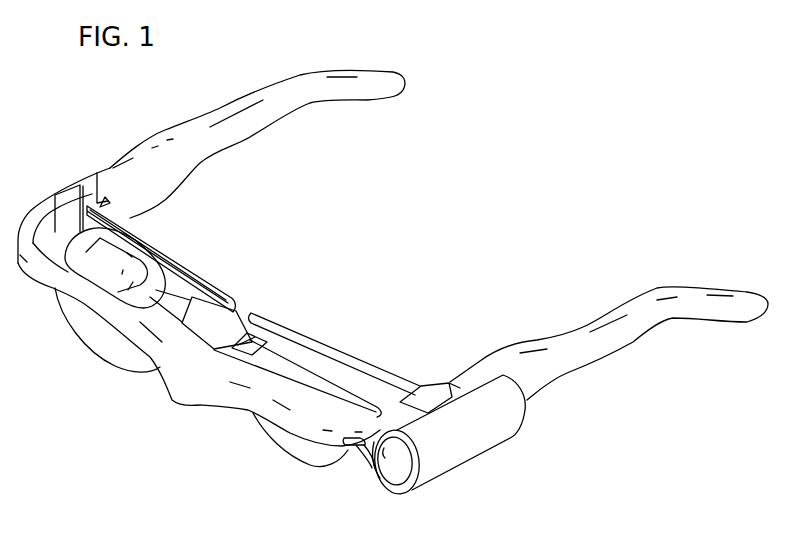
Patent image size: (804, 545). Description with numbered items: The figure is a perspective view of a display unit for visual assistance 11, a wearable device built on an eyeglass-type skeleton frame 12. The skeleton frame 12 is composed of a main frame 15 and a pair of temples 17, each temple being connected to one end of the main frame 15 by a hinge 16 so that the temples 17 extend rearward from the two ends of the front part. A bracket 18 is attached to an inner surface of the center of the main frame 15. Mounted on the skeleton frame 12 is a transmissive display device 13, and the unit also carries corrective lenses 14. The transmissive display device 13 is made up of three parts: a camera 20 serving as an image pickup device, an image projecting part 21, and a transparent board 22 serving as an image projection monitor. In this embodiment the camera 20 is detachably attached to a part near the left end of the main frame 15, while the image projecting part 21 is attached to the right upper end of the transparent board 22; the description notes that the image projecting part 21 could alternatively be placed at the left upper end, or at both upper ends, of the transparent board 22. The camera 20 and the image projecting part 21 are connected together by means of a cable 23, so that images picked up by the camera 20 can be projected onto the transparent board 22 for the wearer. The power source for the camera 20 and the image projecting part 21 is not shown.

The display unit for visual assistance 11 is at (543, 146).
The skeleton frame 12 is at (199, 325).
The transmissive display device 13 is at (88, 277).
The corrective lenses 14 is at (238, 308).
The main frame 15 is at (217, 398).
The hinges 16 is at (117, 226).
The temples 17 is at (220, 149).
The bracket 18 is at (210, 327).
The camera 20 is at (450, 450).
The image projecting part 21 is at (90, 299).
The transparent board 22 is at (123, 357).
The cable 23 is at (370, 475).